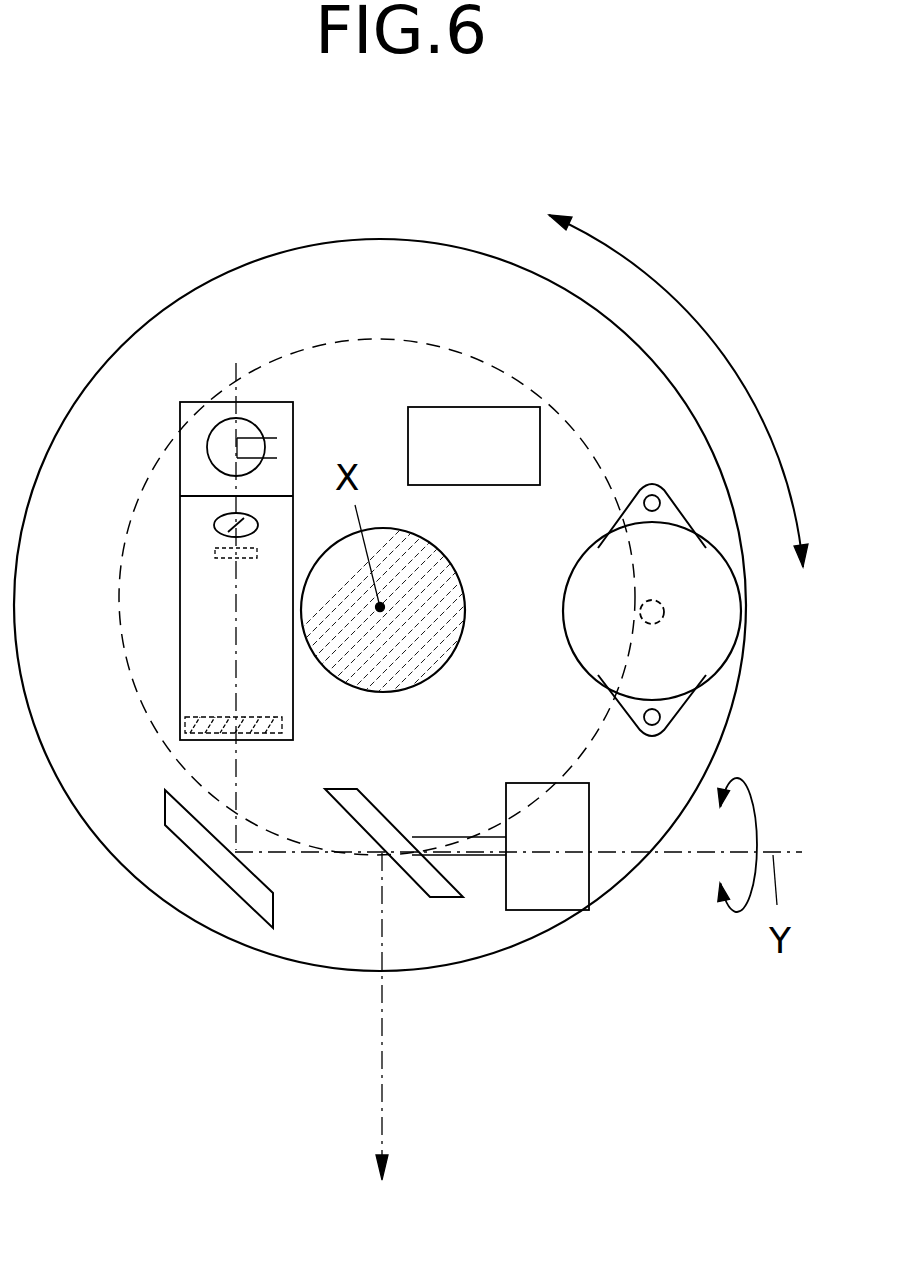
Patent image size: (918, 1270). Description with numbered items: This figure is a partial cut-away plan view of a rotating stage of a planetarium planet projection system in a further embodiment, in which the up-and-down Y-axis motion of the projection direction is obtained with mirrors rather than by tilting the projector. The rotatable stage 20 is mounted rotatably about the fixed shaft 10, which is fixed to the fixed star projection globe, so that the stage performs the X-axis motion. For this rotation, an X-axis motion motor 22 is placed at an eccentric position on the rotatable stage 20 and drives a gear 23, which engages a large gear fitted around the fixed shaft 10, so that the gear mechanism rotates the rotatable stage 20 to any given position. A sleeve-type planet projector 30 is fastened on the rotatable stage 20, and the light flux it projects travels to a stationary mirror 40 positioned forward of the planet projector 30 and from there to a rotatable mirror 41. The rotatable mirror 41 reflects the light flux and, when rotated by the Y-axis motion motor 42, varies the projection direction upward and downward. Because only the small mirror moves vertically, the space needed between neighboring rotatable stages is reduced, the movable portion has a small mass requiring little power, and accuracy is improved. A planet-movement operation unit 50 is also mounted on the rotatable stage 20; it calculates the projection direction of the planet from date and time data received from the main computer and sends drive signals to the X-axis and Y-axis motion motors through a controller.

The fixed shaft 10 is at (403, 690).
The rotatable stage 20 is at (75, 788).
The X-axis motion motor 22 is at (730, 630).
The gear 23 is at (645, 618).
The planet projector 30 is at (175, 597).
The stationary mirror 40 is at (195, 845).
The rotatable mirror 41 is at (447, 887).
The Y-axis motion motor 42 is at (560, 892).
The planet-movement operation unit 50 is at (410, 440).